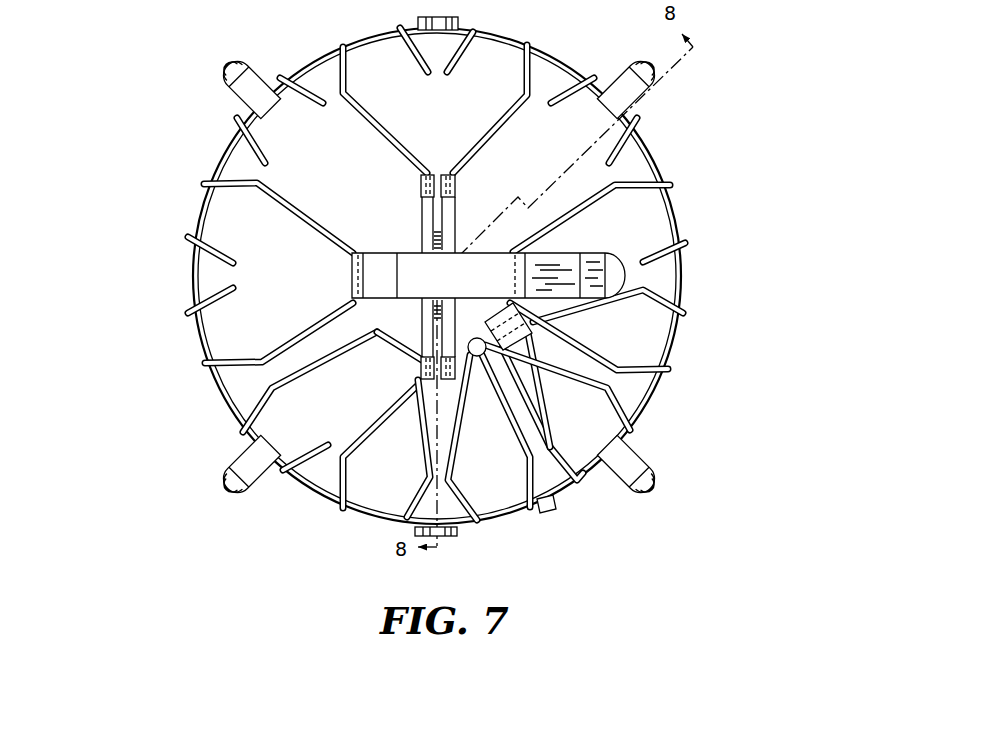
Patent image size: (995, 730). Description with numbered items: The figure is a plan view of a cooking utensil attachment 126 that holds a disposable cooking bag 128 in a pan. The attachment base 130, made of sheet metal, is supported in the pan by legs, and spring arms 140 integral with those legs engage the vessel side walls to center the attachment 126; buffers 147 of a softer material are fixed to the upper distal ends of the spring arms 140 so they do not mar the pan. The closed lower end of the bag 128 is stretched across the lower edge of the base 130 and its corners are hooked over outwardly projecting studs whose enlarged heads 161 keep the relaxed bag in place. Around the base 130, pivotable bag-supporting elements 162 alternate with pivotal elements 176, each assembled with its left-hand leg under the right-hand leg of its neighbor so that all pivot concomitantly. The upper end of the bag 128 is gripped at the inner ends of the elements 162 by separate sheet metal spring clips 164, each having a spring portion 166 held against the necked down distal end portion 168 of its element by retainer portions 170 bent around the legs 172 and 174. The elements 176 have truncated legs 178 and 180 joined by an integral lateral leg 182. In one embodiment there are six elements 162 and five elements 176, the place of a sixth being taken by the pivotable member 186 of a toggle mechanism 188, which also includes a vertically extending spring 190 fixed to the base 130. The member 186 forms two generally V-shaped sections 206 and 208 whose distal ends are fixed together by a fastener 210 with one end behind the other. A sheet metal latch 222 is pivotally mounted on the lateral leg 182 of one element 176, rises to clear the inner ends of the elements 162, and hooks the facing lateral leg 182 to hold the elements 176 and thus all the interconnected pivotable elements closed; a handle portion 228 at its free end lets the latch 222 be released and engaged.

The cooking utensil attachment 126 is at (130, 195).
The disposable cooking bag 128 is at (513, 31).
The attachment base 130 is at (187, 277).
The spring arms 140 is at (253, 80).
The buffers 147 is at (228, 66).
The enlarged heads 161 is at (419, 20).
The bag-supporting elements 162 is at (376, 138).
The spring clips 164 is at (418, 213).
The spring portion 166 is at (458, 238).
The distal end portions 168 is at (424, 250).
The retainer portions 170 is at (422, 183).
The leg 172 is at (512, 121).
The leg 174 is at (366, 108).
The pivotal elements 176 is at (347, 337).
The truncated leg 178 is at (300, 360).
The truncated leg 180 is at (420, 461).
The lateral leg 182 is at (388, 336).
The pivotable member 186 is at (624, 402).
The toggle mechanism 188 is at (600, 484).
The spring 190 is at (548, 518).
The V-shaped section 206 is at (420, 390).
The V-shaped section 208 is at (562, 373).
The fastener 210 is at (473, 322).
The latch 222 is at (340, 262).
The handle portion 228 is at (597, 260).